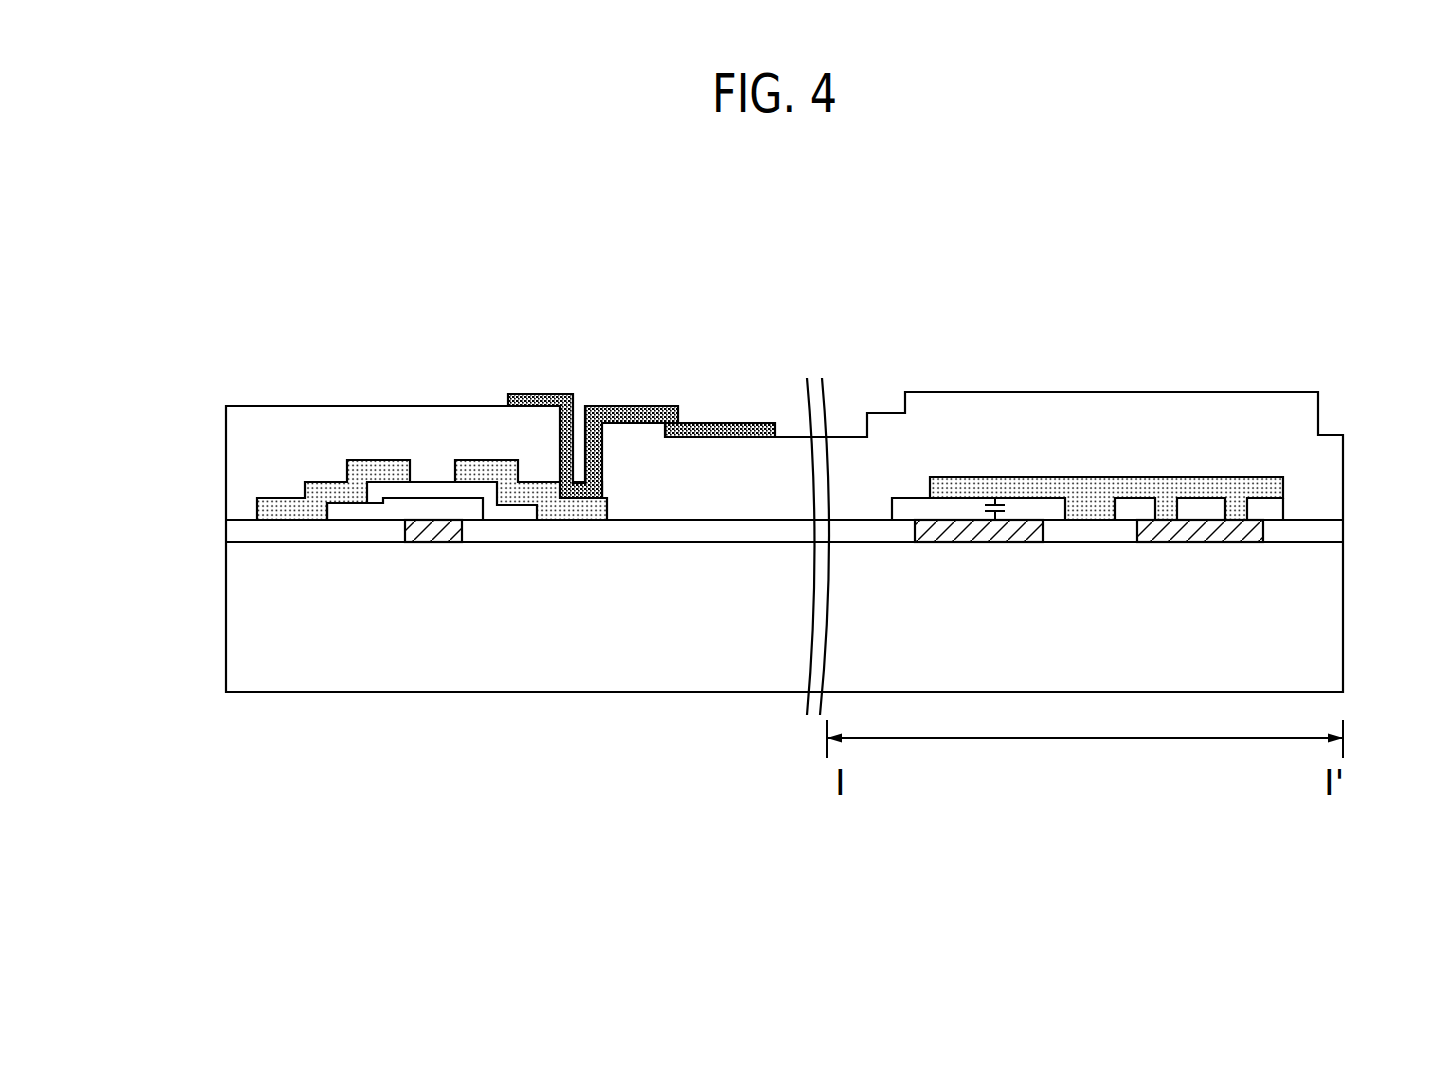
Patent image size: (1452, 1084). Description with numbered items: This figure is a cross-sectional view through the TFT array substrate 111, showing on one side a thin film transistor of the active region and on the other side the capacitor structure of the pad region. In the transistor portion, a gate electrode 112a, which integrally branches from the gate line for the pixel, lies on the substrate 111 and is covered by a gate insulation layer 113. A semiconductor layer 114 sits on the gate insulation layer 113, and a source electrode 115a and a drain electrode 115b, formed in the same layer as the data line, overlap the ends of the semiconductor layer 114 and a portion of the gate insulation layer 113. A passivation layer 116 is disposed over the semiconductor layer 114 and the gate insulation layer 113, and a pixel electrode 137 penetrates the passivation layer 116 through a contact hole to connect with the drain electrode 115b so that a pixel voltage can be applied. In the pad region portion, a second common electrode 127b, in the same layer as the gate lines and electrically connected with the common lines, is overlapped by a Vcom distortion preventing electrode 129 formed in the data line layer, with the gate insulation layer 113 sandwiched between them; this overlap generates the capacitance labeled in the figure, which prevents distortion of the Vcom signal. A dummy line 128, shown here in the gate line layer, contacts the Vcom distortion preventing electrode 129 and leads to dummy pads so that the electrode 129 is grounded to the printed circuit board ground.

The TFT array substrate 111 is at (1327, 612).
The gate electrode 112a is at (433, 533).
The gate insulation layer 113 is at (242, 529).
The semiconductor layer 114 is at (387, 490).
The source electrode 115a is at (284, 507).
The drain electrode 115b is at (482, 473).
The passivation layer 116 is at (242, 452).
The pixel electrode 137 is at (715, 423).
The second common electrode 127b is at (977, 525).
The dummy line 128 is at (1203, 518).
The Vcom distortion preventing electrode 129 is at (1095, 483).